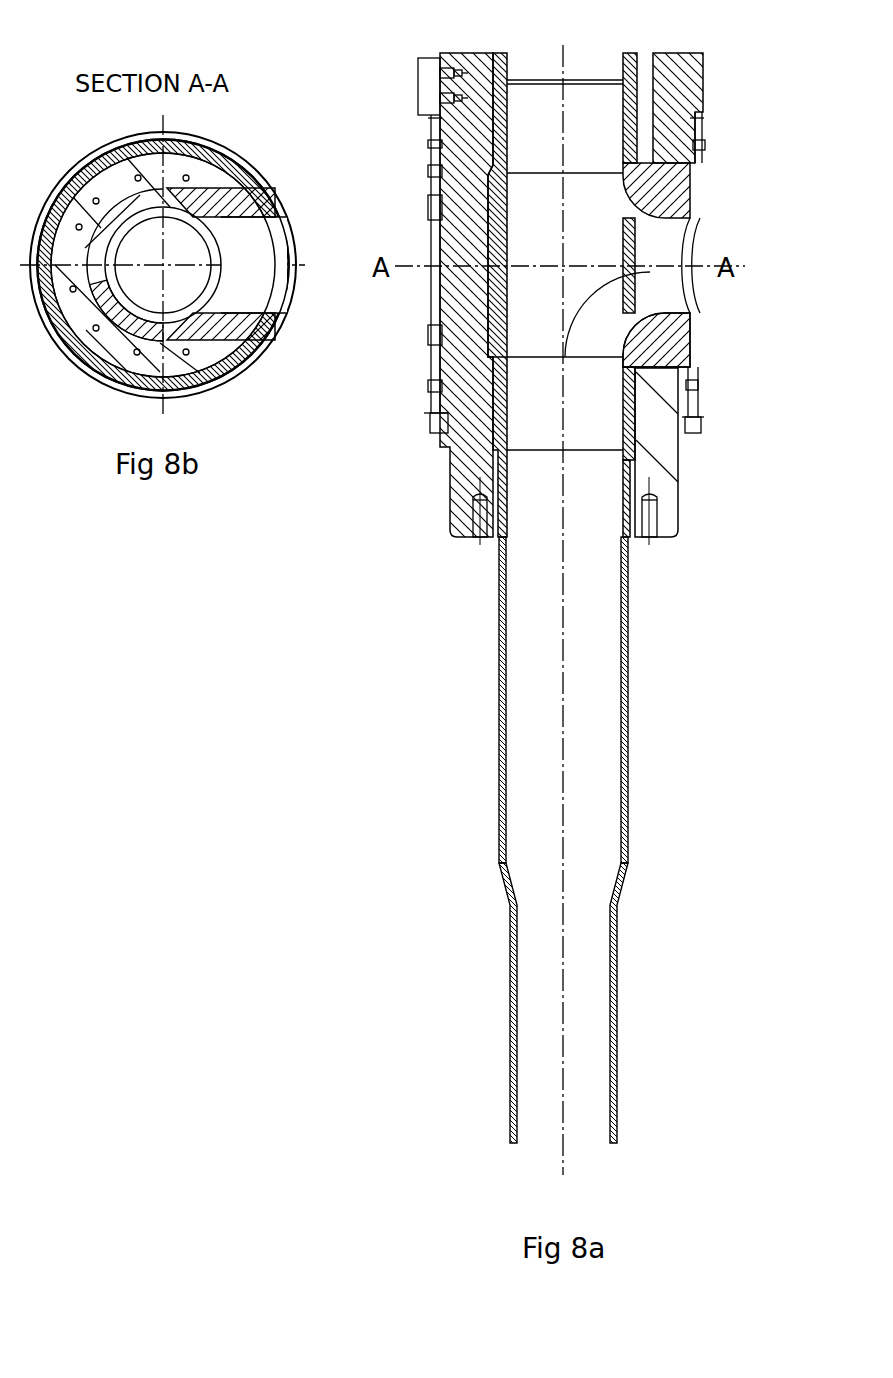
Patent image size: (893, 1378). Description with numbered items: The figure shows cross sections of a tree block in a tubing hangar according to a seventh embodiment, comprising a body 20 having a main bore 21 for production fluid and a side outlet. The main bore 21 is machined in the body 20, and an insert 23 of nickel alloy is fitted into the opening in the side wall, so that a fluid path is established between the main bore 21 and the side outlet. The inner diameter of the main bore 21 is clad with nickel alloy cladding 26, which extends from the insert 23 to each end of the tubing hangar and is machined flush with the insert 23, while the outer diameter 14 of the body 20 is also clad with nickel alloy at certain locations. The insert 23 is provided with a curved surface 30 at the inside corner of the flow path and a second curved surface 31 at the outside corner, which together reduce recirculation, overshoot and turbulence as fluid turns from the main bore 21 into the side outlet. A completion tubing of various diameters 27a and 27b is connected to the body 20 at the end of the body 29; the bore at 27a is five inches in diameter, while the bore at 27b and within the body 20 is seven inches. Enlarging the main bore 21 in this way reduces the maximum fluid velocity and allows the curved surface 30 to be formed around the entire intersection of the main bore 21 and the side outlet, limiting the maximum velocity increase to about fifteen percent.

In FIG. 8A, the outer diameter 14 is at (440, 318).
In FIG. 8A, the body 20 is at (660, 448).
In FIG. 8A, the main bore 21 is at (547, 420).
In FIG. 8A, the insert 23 is at (663, 350).
In FIG. 8B, the insert 23 is at (223, 203).
In FIG. 8A, the nickel alloy cladding 26 is at (498, 408).
In FIG. 8A, the completion tubing diameter 27a is at (512, 953).
In FIG. 8A, the completion tubing diameter 27b is at (499, 671).
In FIG. 8A, the end of the body 29 is at (653, 540).
In FIG. 8A, the curved surface 30 is at (650, 320).
In FIG. 8A, the second curved surface 31 is at (653, 210).